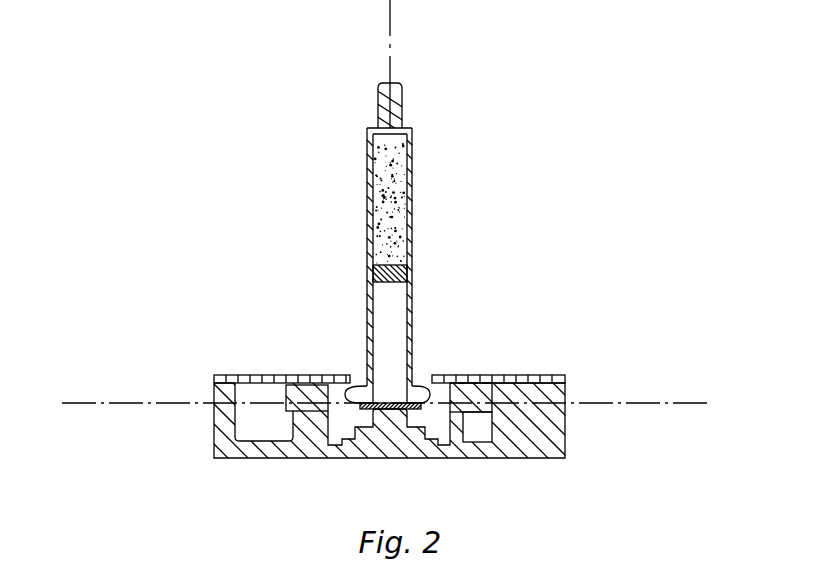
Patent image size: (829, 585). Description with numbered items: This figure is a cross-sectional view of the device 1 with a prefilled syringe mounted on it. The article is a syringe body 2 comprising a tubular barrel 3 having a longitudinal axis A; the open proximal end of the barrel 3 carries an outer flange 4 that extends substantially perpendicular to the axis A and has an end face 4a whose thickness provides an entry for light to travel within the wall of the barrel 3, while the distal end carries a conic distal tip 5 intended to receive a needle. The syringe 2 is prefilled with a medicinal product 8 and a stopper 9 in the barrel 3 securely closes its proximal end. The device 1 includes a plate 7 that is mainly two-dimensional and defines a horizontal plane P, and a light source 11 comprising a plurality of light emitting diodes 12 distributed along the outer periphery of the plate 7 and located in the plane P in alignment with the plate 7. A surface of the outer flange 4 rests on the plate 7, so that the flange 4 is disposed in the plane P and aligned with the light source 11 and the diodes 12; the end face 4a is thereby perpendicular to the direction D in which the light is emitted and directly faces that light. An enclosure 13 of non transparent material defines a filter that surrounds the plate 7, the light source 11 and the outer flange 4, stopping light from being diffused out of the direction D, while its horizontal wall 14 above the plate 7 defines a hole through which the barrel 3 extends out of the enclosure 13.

The device 1 is at (158, 57).
The syringe body 2 is at (478, 195).
The barrel 3 is at (366, 196).
The outer flange 4 is at (358, 384).
The end face 4a is at (352, 393).
The conic distal tip 5 is at (379, 96).
The plate 7 is at (422, 412).
The medicinal product 8 is at (392, 158).
The stopper 9 is at (408, 274).
The light source 11 is at (281, 427).
The light emitting diodes 12 is at (284, 405).
The enclosure 13 is at (569, 421).
The horizontal wall 14 is at (234, 370).
The longitudinal axis A is at (389, 24).
The plane P is at (702, 398).
The direction D is at (343, 402).